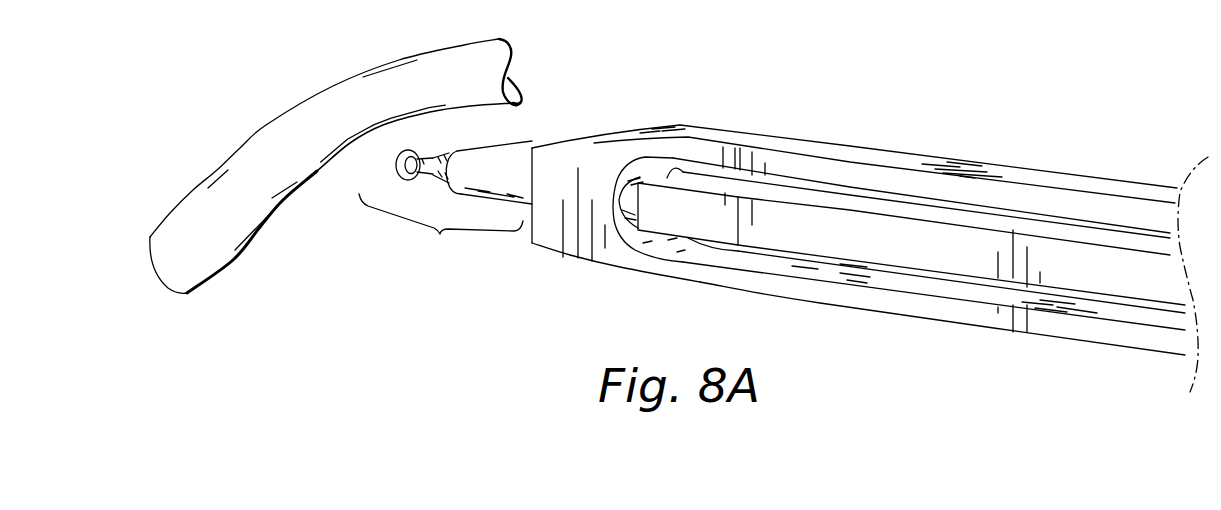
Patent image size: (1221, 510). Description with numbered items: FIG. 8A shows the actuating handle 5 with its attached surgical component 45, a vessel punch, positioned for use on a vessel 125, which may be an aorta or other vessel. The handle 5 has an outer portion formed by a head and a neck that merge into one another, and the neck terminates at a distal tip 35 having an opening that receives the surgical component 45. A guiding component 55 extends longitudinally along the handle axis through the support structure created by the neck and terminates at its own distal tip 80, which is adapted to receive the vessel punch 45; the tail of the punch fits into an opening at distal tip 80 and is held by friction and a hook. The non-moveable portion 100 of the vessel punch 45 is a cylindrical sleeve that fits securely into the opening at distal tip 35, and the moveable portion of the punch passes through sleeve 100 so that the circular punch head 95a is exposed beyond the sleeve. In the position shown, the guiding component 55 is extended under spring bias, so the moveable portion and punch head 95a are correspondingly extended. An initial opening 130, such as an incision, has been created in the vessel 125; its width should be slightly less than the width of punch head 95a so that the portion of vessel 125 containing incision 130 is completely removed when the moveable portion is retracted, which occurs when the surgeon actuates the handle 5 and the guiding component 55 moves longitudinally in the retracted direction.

The handle 5 is at (1037, 139).
The distal tip 35 is at (570, 257).
The surgical component 45 is at (441, 228).
The guiding component 55 is at (857, 203).
The distal tip 80 is at (700, 183).
The punch head 95a is at (403, 179).
The non-moveable portion 100 is at (505, 165).
The vessel 125 is at (212, 193).
The initial opening 130 is at (331, 122).